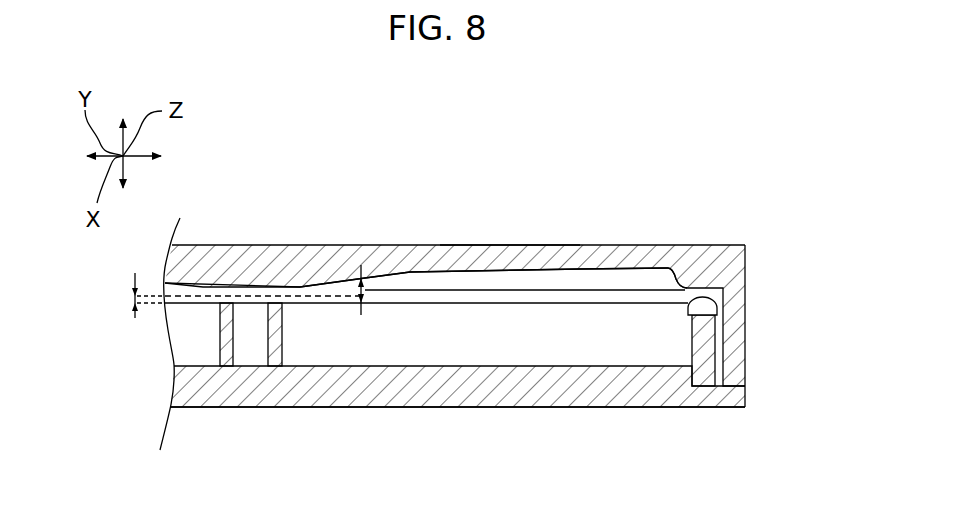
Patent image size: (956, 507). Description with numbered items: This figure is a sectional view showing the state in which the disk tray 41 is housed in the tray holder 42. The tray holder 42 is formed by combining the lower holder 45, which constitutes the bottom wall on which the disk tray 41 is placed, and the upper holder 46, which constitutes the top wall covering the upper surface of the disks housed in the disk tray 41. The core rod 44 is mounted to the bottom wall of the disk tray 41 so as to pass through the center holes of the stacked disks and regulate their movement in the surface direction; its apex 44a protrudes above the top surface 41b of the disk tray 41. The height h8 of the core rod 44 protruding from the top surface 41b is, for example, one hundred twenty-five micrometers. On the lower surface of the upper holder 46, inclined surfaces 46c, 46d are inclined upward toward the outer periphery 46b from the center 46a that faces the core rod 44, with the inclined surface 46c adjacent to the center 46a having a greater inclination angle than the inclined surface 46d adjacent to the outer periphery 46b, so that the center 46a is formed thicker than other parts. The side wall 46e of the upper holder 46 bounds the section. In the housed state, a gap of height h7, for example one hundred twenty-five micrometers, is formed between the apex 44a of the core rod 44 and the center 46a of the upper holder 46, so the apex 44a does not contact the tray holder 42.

The disk tray 41 is at (470, 372).
The top surface of disk tray 41b is at (433, 303).
The tray holder 42 is at (793, 272).
The core rod 44 is at (203, 296).
The apex of core rod 44a is at (226, 300).
The lower holder 45 is at (739, 370).
The upper holder 46 is at (739, 303).
The center of upper holder 46a is at (265, 288).
The outer periphery of upper holder 46b is at (692, 273).
The inclined surface 46c is at (369, 277).
The inclined surface 46d is at (508, 252).
The side wall of upper holder 46e is at (582, 277).
The height of gap h7 is at (364, 303).
The height of core rod protrusion h8 is at (133, 300).